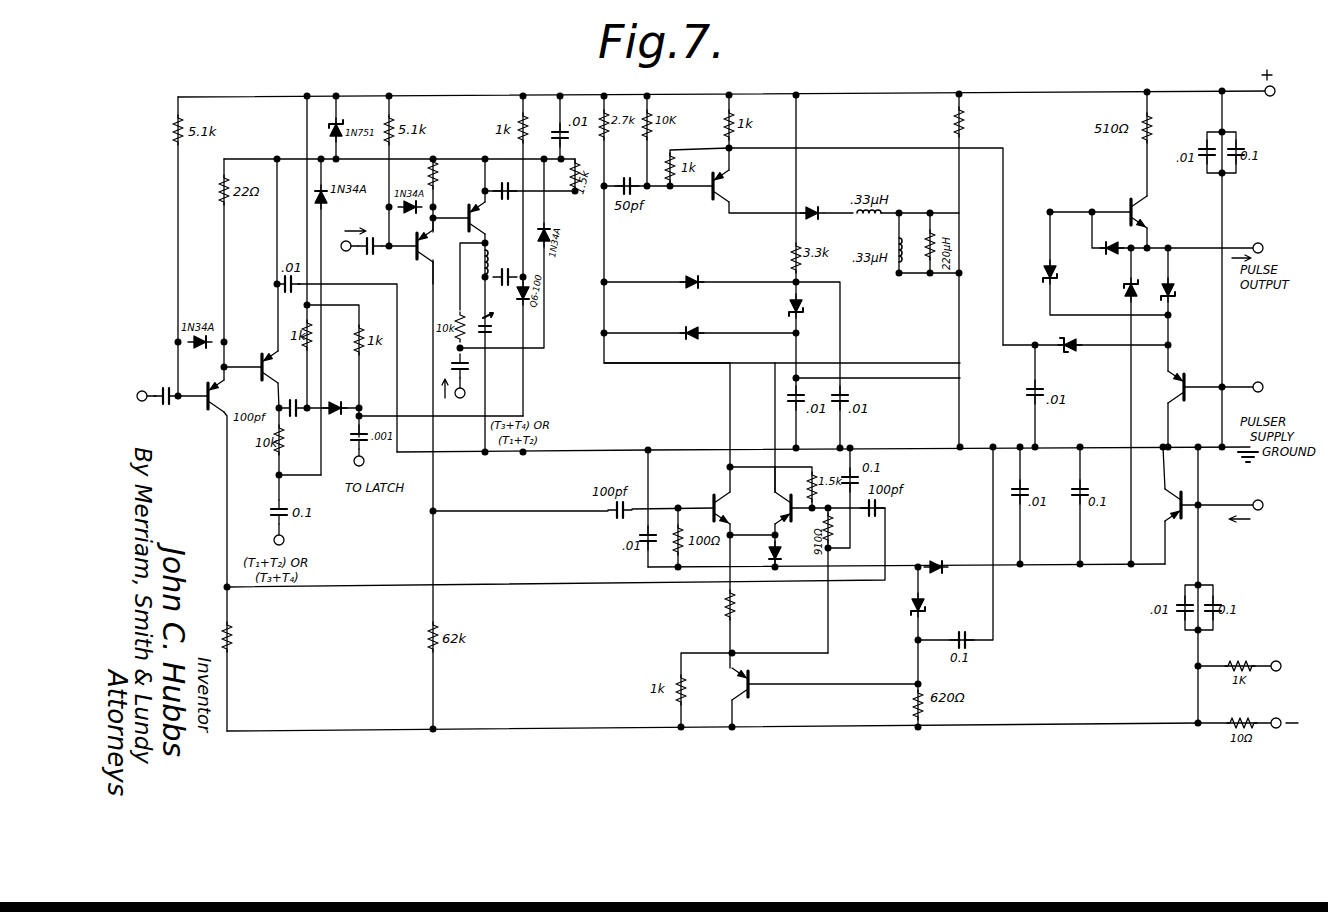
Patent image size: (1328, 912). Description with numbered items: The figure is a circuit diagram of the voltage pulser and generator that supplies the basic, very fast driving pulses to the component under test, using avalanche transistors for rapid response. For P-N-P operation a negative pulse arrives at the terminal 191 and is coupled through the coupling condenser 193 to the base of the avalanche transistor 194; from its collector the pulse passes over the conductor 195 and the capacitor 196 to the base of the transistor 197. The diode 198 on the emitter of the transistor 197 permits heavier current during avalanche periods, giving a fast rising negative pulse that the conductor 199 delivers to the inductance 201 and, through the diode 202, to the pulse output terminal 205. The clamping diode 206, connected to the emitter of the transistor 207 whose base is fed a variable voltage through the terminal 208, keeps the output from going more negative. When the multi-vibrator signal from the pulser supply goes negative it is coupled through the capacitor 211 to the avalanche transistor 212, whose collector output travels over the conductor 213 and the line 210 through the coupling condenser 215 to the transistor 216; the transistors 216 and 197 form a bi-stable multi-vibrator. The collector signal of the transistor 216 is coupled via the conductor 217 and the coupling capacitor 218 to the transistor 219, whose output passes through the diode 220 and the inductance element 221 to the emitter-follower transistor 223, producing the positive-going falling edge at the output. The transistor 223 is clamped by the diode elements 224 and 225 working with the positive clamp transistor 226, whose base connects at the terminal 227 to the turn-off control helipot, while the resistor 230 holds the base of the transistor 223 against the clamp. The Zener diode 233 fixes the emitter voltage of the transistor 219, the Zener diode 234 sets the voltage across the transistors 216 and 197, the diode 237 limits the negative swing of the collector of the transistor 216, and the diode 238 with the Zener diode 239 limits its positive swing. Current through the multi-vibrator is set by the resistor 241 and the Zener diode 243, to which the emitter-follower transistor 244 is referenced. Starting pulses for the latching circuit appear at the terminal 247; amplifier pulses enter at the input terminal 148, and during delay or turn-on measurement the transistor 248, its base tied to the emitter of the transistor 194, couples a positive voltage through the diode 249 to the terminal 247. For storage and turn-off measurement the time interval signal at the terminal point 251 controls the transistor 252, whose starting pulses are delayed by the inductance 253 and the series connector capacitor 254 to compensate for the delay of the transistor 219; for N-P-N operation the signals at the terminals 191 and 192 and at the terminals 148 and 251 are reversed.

The input terminal 148 is at (285, 541).
The terminal 191 is at (142, 390).
The terminal 192 is at (349, 251).
The coupling condenser 193 is at (166, 408).
The avalanche transistor 194 is at (217, 477).
The conductor 195 is at (497, 587).
The capacitor 196 is at (872, 518).
The transistor 197 is at (790, 506).
The diode 198 is at (790, 566).
The conductor 199 is at (772, 410).
The inductance 201 is at (899, 275).
The diode 202 is at (1105, 252).
The pulse output terminal 205 is at (1252, 244).
The clamping diode 206 is at (1126, 293).
The transistor 207 is at (1176, 505).
The terminal 208 is at (1256, 500).
The conductor 210 is at (520, 497).
The capacitor 211 is at (378, 252).
The avalanche transistor 212 is at (427, 251).
The conductor 213 is at (436, 479).
The coupling condenser 215 is at (614, 515).
The transistor 216 is at (712, 499).
The conductor 217 is at (646, 365).
The coupling capacitor 218 is at (627, 178).
The transistor 219 is at (735, 186).
The diode 220 is at (817, 204).
The inductance element 221 is at (899, 210).
The emitter-follower transistor 223 is at (1145, 214).
The diode element 224 is at (1057, 269).
The diode element 225 is at (1173, 292).
The positive clamp transistor 226 is at (1180, 387).
The terminal 227 is at (1252, 382).
The resistor 230 is at (965, 130).
The Zener diode 233 is at (1073, 351).
The Zener diode 234 is at (937, 556).
The diode 237 is at (690, 328).
The diode 238 is at (692, 277).
The Zener diode 239 is at (789, 304).
The resistor 241 is at (723, 609).
The Zener diode 243 is at (910, 606).
The transistor 244 is at (740, 687).
The terminal 247 is at (364, 463).
The transistor 248 is at (262, 357).
The diode 249 is at (338, 403).
The terminal point 251 is at (467, 392).
The transistor 252 is at (480, 215).
The inductance 253 is at (489, 264).
The series connector capacitor 254 is at (500, 331).